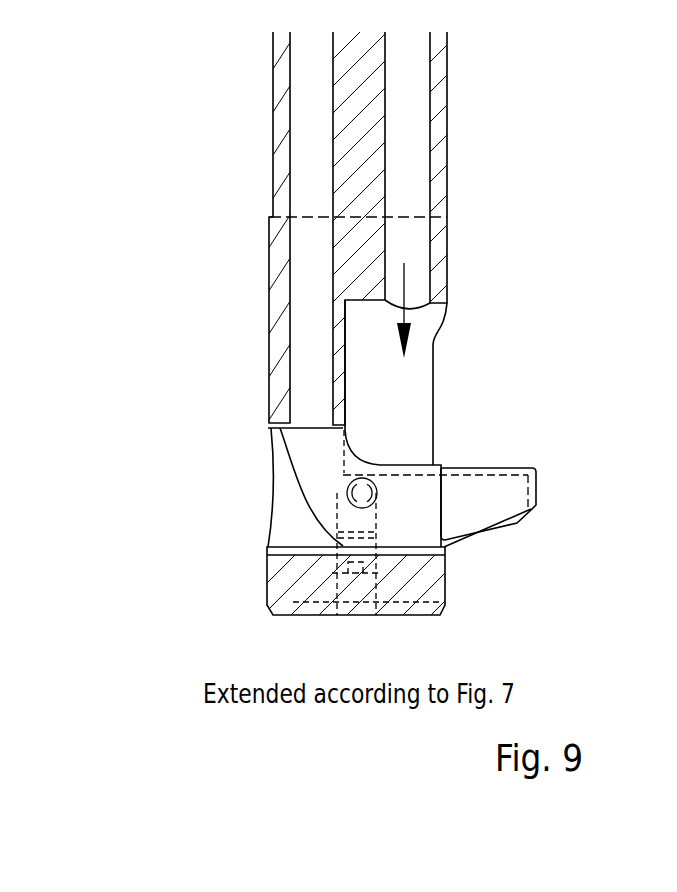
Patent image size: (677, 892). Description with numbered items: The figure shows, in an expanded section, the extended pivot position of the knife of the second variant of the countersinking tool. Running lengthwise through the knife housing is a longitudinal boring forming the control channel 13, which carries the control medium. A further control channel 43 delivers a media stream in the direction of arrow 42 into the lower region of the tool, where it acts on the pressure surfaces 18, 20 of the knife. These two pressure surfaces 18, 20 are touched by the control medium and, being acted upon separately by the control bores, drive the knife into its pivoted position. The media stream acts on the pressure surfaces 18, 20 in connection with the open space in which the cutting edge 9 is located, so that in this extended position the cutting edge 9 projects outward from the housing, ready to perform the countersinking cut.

The control channel 13 is at (307, 97).
The control channel 43 is at (407, 95).
The arrow 42 is at (404, 317).
The pressure surface 18 is at (303, 425).
The pressure surface 20 is at (362, 453).
The cutting edge 9 is at (485, 470).